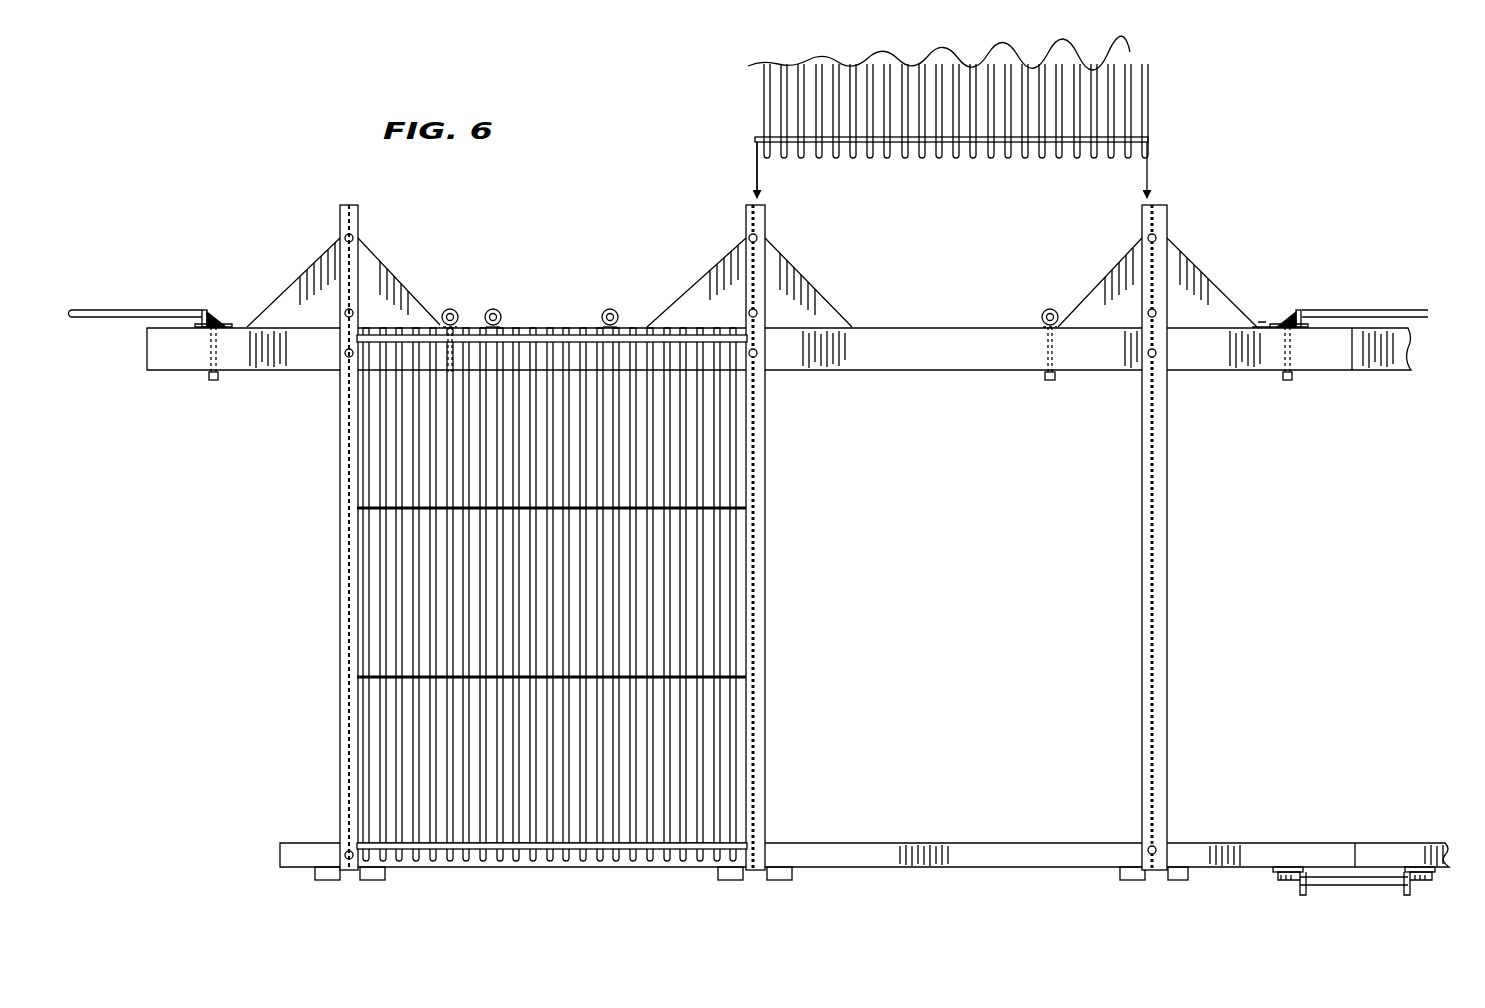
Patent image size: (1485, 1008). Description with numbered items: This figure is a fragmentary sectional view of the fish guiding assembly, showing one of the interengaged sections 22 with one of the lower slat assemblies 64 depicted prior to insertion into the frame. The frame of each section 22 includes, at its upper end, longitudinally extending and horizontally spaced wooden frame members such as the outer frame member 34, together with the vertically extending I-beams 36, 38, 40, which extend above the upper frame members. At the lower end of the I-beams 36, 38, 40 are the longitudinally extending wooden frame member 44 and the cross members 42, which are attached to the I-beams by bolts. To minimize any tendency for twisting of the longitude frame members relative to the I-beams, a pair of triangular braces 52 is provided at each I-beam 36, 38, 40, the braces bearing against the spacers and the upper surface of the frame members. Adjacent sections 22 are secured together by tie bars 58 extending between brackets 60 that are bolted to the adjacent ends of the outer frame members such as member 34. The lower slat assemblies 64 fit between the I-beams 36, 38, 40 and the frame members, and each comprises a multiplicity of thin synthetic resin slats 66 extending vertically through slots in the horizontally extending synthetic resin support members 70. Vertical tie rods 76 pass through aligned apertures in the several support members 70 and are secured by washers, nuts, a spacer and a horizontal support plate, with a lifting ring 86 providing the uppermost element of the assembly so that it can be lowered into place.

The section 22 is at (1196, 322).
The wooden frame member 34 is at (1261, 322).
The I-beam 36 is at (1167, 230).
The I-beam 38 is at (766, 225).
The I-beam 40 is at (360, 223).
The cross member 42 is at (1130, 878).
The wooden frame member 44 is at (968, 856).
The triangular brace 52 is at (383, 287).
The tie bar 58 is at (155, 310).
The bracket 60 is at (208, 310).
The lower slat assembly 64 is at (788, 466).
The slat 66 is at (1025, 90).
The support member 70 is at (718, 324).
The vertical tie rod 76 is at (613, 360).
The lifting ring 86 is at (608, 300).